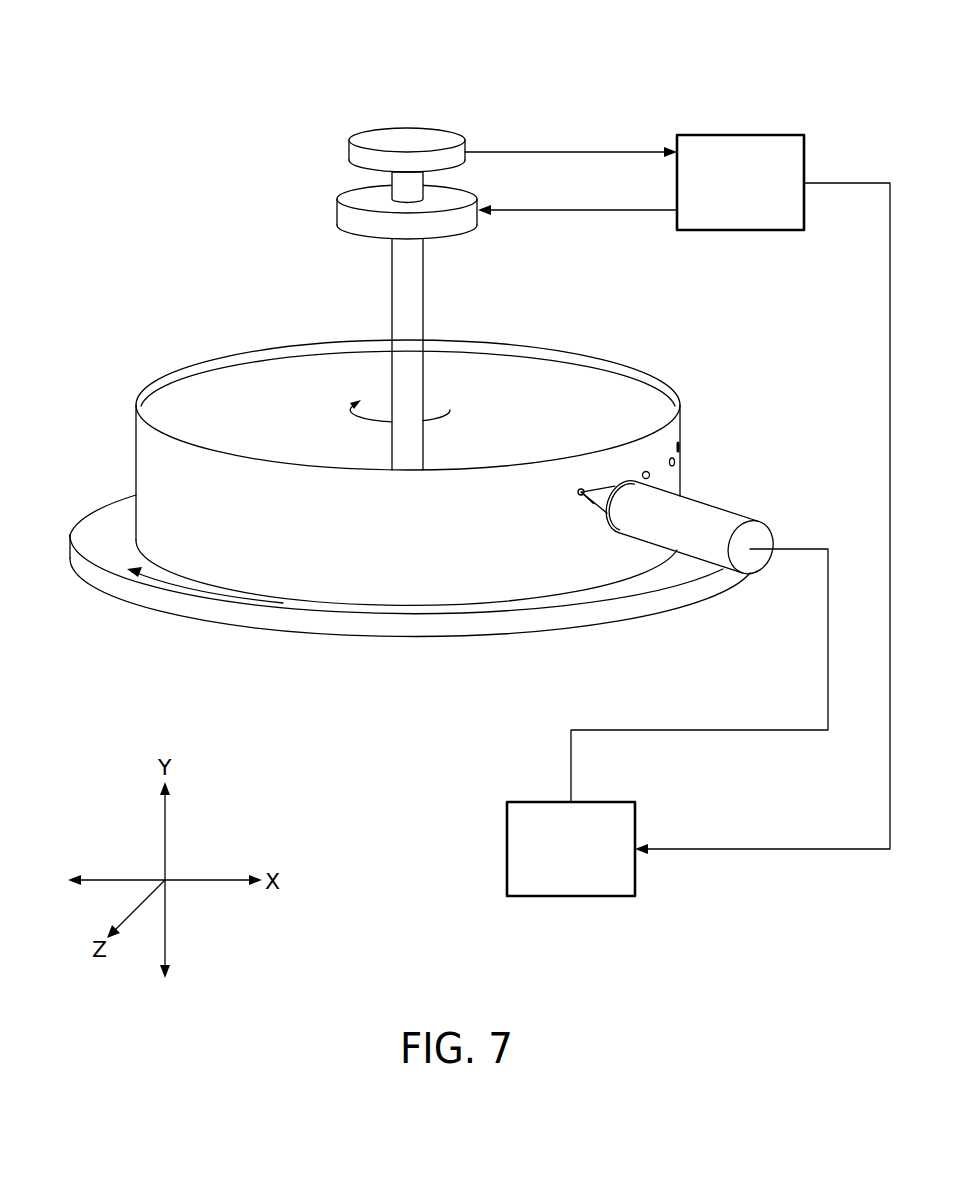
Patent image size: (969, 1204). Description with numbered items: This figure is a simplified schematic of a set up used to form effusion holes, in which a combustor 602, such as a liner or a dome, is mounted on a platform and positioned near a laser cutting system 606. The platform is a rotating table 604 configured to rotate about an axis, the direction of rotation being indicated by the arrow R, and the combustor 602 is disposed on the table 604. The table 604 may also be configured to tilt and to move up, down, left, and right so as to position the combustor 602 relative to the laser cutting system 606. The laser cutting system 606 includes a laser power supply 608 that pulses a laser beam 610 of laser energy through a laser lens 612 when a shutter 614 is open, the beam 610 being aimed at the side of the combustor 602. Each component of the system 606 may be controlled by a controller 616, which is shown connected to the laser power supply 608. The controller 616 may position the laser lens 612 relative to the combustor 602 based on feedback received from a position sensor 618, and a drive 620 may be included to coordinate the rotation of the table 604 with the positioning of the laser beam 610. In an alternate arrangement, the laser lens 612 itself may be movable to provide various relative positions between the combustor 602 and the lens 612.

The combustor 602 is at (543, 356).
The rotating table 604 is at (620, 592).
The laser cutting system 606 is at (226, 96).
The laser power supply 608 is at (507, 852).
The laser beam 610 is at (597, 503).
The laser lens 612 is at (722, 515).
The shutter 614 is at (628, 478).
The controller 616 is at (737, 135).
The position sensor 618 is at (339, 215).
The drive 620 is at (404, 134).
The rotation direction R is at (220, 596).